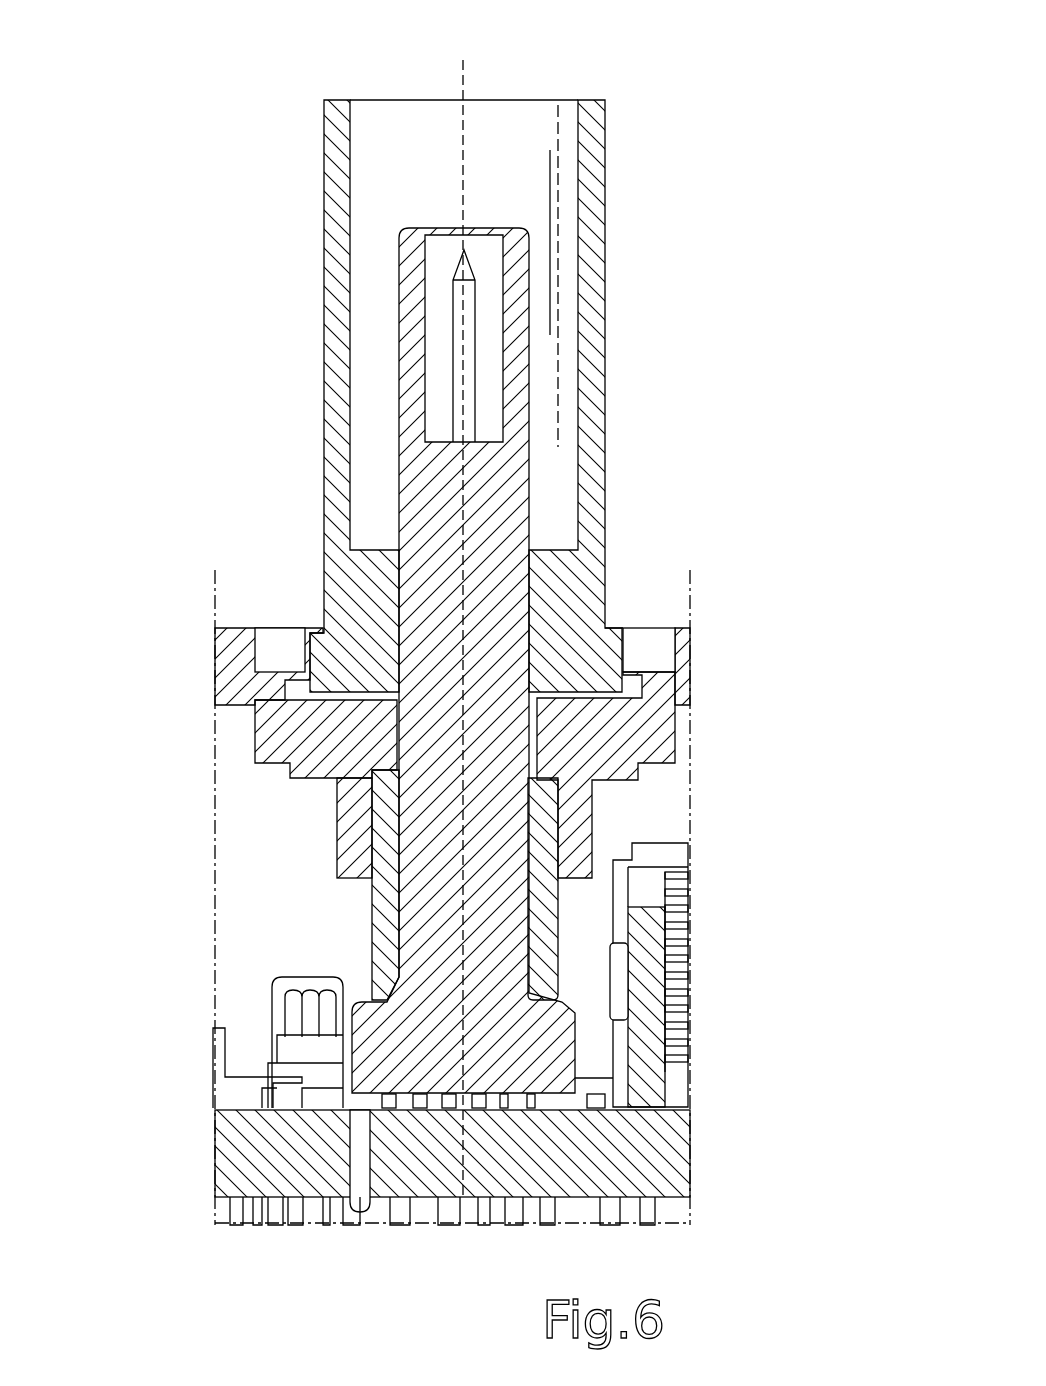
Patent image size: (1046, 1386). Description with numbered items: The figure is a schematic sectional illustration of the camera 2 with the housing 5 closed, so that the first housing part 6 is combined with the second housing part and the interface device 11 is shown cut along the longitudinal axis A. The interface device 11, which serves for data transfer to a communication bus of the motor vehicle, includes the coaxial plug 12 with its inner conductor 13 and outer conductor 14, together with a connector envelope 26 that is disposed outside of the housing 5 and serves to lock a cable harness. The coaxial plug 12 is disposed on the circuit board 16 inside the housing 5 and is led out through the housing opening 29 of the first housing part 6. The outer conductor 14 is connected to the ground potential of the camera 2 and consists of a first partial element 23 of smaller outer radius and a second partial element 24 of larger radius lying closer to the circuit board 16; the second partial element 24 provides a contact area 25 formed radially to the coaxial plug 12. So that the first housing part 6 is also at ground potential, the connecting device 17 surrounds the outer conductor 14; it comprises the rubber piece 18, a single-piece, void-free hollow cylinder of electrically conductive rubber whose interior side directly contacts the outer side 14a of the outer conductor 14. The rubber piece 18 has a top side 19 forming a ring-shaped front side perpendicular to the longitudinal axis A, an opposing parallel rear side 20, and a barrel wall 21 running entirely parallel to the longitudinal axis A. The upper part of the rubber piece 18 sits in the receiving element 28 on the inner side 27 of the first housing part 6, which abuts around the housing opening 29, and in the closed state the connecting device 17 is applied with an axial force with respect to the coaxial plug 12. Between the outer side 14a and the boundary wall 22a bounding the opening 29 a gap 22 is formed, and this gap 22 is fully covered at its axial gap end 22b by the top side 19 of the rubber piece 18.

The camera 2 is at (396, 1246).
The housing 5 is at (187, 654).
The first housing part 6 is at (660, 690).
The interface device 11 is at (549, 91).
The coaxial plug 12 is at (541, 313).
The inner conductor 13 is at (470, 306).
The outer conductor 14 is at (512, 597).
The outer side of the outer conductor 14a is at (535, 630).
The circuit board 16 is at (650, 1163).
The connecting device 17 is at (586, 895).
The rubber piece 18 is at (370, 900).
The top side 19 is at (345, 796).
The rear side 20 is at (390, 1000).
The barrel wall 21 is at (370, 935).
The gap 22 is at (394, 690).
The boundary wall 22a is at (390, 735).
The axial gap end 22b is at (400, 767).
The first partial element 23 is at (538, 476).
The second partial element 24 is at (584, 1048).
The contact area 25 is at (640, 980).
The connector envelope 26 is at (596, 318).
The inner side 27 is at (279, 769).
The receiving element 28 is at (340, 830).
The housing opening 29 is at (546, 680).
The longitudinal axis A is at (463, 68).